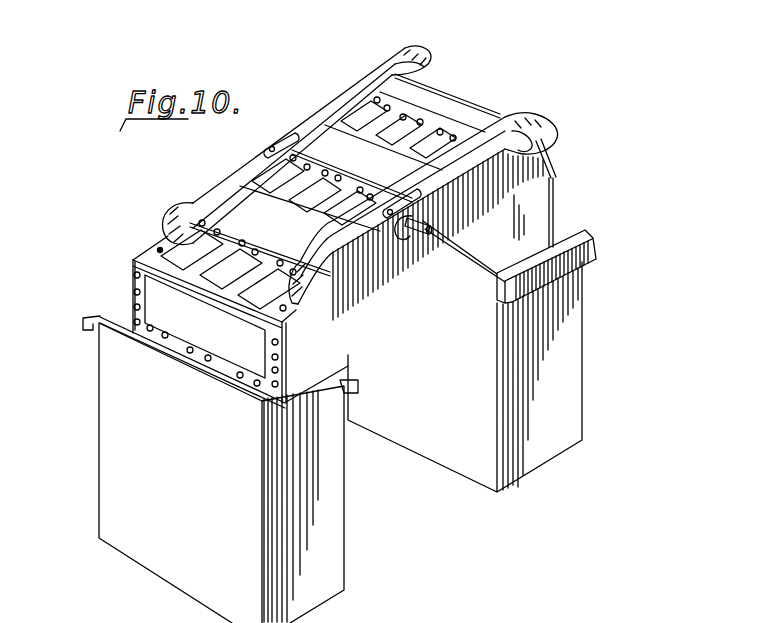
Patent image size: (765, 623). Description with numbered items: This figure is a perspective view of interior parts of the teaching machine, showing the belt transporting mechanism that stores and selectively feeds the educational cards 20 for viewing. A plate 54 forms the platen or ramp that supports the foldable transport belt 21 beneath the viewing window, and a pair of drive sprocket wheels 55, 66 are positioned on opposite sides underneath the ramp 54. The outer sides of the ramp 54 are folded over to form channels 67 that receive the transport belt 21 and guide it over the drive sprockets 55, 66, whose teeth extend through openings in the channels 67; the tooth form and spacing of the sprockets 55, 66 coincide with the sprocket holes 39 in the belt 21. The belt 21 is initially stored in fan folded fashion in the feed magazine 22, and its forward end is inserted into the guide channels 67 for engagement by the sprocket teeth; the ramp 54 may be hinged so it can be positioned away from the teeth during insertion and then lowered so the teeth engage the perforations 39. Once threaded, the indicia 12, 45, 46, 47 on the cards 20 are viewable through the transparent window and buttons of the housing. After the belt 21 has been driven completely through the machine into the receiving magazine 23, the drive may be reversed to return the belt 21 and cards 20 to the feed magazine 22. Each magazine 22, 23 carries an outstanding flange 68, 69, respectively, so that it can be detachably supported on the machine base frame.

The indicia 12 is at (327, 138).
The educational cards 20 is at (320, 192).
The transport belt 21 is at (131, 275).
The feed magazine 22 is at (115, 385).
The receiving magazine 23 is at (565, 316).
The sprocket holes 39 is at (278, 356).
The indicia 45 is at (280, 178).
The indicia 46 is at (311, 194).
The indicia 47 is at (353, 215).
The plate 54 is at (437, 108).
The drive sprocket wheel 55 is at (410, 240).
The drive sprocket wheel 66 is at (268, 146).
The channels 67 is at (405, 54).
The outstanding flange 68 is at (347, 397).
The outstanding flange 69 is at (597, 249).